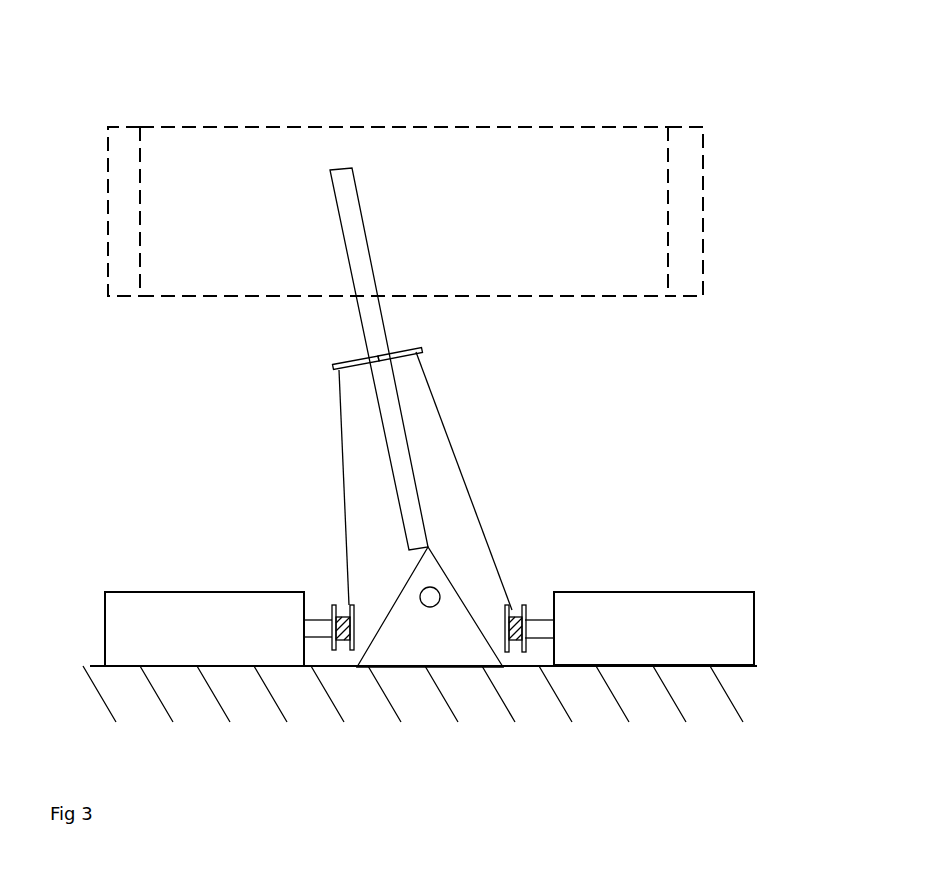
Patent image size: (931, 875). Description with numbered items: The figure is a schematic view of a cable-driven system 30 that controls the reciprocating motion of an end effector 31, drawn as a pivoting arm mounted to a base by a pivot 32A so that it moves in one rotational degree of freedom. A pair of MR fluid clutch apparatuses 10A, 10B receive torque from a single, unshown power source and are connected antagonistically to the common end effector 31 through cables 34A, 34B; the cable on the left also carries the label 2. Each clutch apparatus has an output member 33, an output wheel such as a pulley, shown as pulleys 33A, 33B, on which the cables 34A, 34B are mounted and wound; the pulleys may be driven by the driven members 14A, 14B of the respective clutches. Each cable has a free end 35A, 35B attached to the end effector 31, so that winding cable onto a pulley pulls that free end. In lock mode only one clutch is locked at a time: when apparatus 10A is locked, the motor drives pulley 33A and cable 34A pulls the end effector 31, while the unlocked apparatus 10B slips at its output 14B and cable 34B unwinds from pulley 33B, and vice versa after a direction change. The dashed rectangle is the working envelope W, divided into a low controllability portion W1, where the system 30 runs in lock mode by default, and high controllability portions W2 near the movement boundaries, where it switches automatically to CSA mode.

The working envelope W is at (407, 157).
The low controllability portion W1 is at (552, 127).
The high controllability portions W2 is at (117, 123).
The cable-driven system 30 is at (416, 417).
The end effector 31 is at (366, 247).
The free end of cable 35A is at (338, 362).
The free end of cable 35B is at (416, 348).
The cable 34A is at (303, 487).
The cable 2 is at (343, 493).
The cable 34B is at (482, 513).
The output member 33 is at (430, 607).
The pivot 32A is at (420, 592).
The pulley 33A is at (328, 600).
The pulley 33B is at (541, 620).
The MR fluid clutch apparatus 10A is at (228, 592).
The MR fluid clutch apparatus 10B is at (648, 592).
The driven member 14A is at (304, 629).
The driven member 14B is at (548, 632).